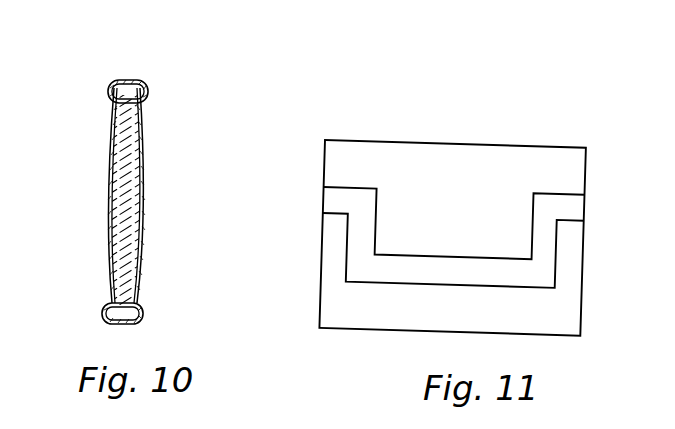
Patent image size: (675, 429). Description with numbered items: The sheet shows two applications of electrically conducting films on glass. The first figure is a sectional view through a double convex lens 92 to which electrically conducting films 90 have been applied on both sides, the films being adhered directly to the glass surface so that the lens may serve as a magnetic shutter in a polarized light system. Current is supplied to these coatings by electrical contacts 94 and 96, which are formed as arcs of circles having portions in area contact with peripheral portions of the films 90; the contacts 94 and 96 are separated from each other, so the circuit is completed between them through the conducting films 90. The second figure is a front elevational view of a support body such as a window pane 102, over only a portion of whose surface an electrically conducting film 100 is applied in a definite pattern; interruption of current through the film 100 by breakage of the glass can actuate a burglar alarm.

In FIG. 10, the electrically conducting films 90 is at (108, 178).
In FIG. 10, the double convex lens 92 is at (123, 247).
In FIG. 10, the electrical contact 94 is at (147, 82).
In FIG. 10, the electrical contact 96 is at (140, 318).
In FIG. 11, the electrically conducting film 100 is at (436, 273).
In FIG. 11, the window pane 102 is at (487, 158).